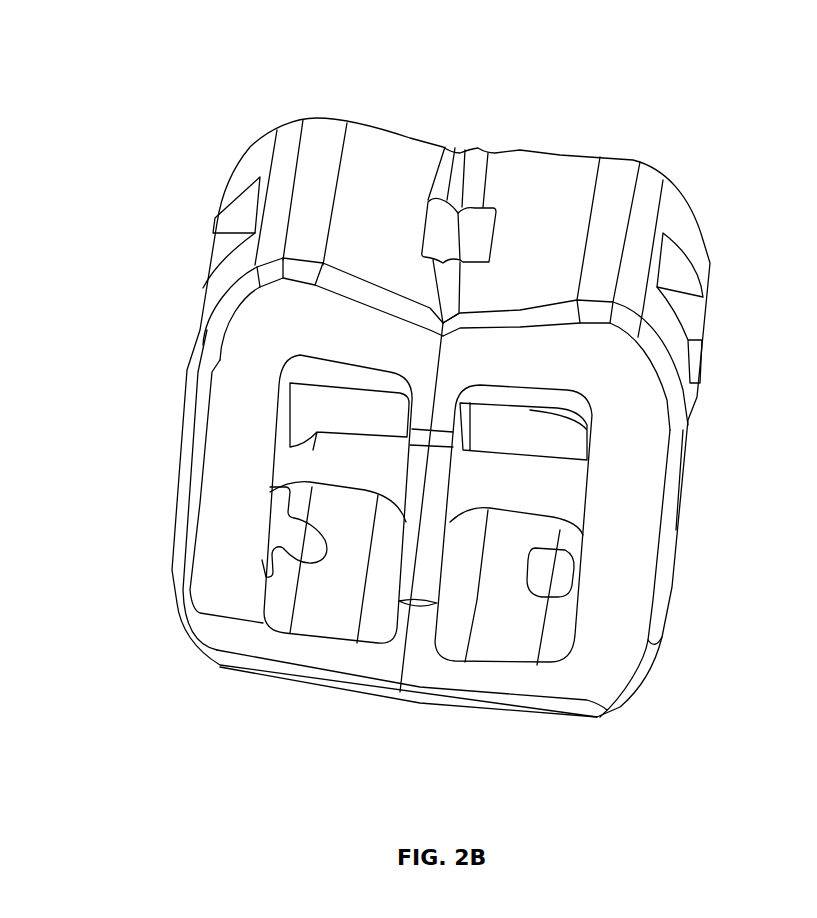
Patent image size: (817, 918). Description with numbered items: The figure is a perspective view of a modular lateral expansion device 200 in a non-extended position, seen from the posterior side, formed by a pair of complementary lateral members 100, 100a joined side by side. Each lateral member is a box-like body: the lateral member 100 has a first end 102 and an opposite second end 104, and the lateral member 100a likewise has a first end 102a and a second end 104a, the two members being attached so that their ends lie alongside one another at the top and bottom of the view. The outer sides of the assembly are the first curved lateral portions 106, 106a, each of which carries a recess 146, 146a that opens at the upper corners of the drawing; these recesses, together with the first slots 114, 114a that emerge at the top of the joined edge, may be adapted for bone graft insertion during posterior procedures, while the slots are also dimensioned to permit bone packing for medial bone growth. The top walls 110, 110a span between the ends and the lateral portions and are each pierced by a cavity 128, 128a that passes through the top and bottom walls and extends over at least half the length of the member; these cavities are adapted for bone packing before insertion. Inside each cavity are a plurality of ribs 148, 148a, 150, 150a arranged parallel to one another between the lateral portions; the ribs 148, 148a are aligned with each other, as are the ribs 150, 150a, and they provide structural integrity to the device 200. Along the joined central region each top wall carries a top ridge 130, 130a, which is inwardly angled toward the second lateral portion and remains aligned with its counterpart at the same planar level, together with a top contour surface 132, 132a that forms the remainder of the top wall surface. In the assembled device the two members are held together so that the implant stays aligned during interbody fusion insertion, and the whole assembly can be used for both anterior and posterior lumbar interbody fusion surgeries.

The modular lateral expansion device 200 is at (137, 775).
The lateral member 100 is at (509, 438).
The lateral member 100a is at (323, 396).
The first end 102 is at (600, 157).
The first end 102a is at (362, 152).
The second end 104 is at (518, 715).
The second end 104a is at (280, 683).
The first curved lateral portion 106 is at (673, 553).
The first curved lateral portion 106a is at (180, 487).
The top wall 110 is at (637, 683).
The top wall 110a is at (187, 633).
The first slot 114 is at (485, 222).
The first slot 114a is at (432, 225).
The cavity 128 is at (578, 655).
The cavity 128a is at (240, 623).
The top ridge 130 is at (433, 493).
The top ridge 130a is at (420, 482).
The top contour surface 132 is at (620, 602).
The top contour surface 132a is at (218, 548).
The recess 146 is at (675, 270).
The recess 146a is at (233, 220).
The rib 148 is at (430, 477).
The rib 148a is at (407, 478).
The rib 150 is at (527, 412).
The rib 150a is at (343, 387).